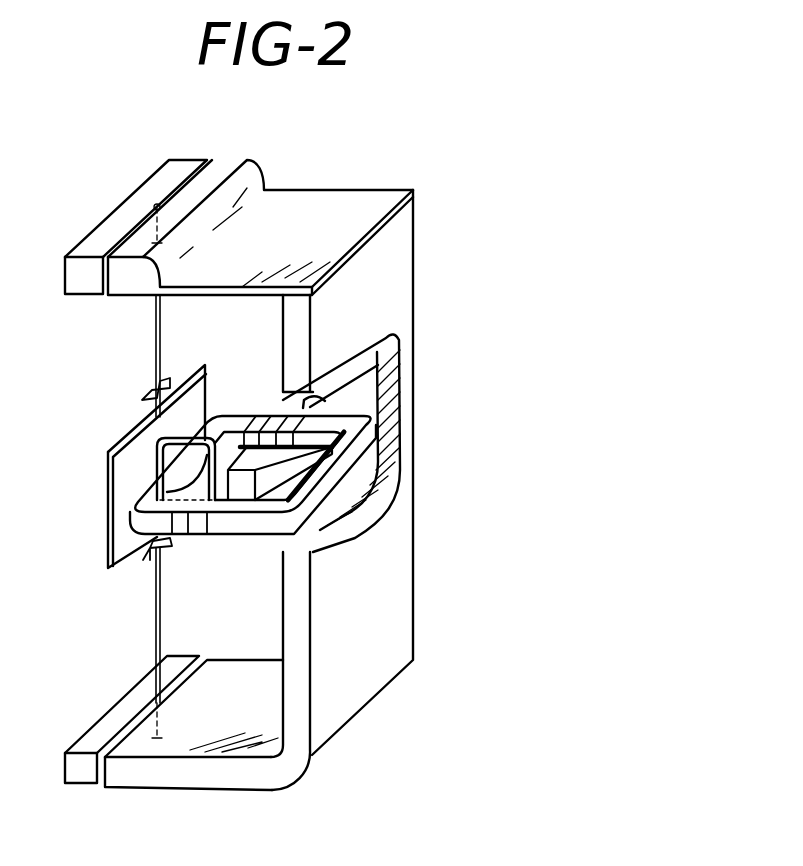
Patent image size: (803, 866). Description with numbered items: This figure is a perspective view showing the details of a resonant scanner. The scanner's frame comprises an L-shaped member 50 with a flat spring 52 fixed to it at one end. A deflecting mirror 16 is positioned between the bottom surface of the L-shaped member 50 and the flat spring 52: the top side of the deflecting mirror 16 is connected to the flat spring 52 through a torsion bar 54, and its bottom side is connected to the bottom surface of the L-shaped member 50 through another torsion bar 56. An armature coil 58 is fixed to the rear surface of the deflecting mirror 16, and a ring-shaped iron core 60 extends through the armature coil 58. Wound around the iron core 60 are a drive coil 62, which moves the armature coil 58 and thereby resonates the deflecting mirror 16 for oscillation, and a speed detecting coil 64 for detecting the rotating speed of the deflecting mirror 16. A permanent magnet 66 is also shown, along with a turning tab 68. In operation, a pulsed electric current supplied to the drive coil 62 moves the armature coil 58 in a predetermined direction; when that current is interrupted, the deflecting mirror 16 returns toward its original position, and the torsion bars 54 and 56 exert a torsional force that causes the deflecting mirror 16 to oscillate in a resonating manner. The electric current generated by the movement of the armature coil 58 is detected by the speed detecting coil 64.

The deflecting mirror 16 is at (108, 541).
The L-shaped member 50 is at (193, 773).
The flat spring 52 is at (328, 205).
The torsion bar 54 is at (156, 334).
The torsion bar 56 is at (157, 655).
The armature coil 58 is at (190, 435).
The ring-shaped iron core 60 is at (253, 525).
The drive coil 62 is at (178, 522).
The speed detecting coil 64 is at (398, 374).
The permanent magnet 66 is at (282, 490).
The turning tab 68 is at (142, 400).